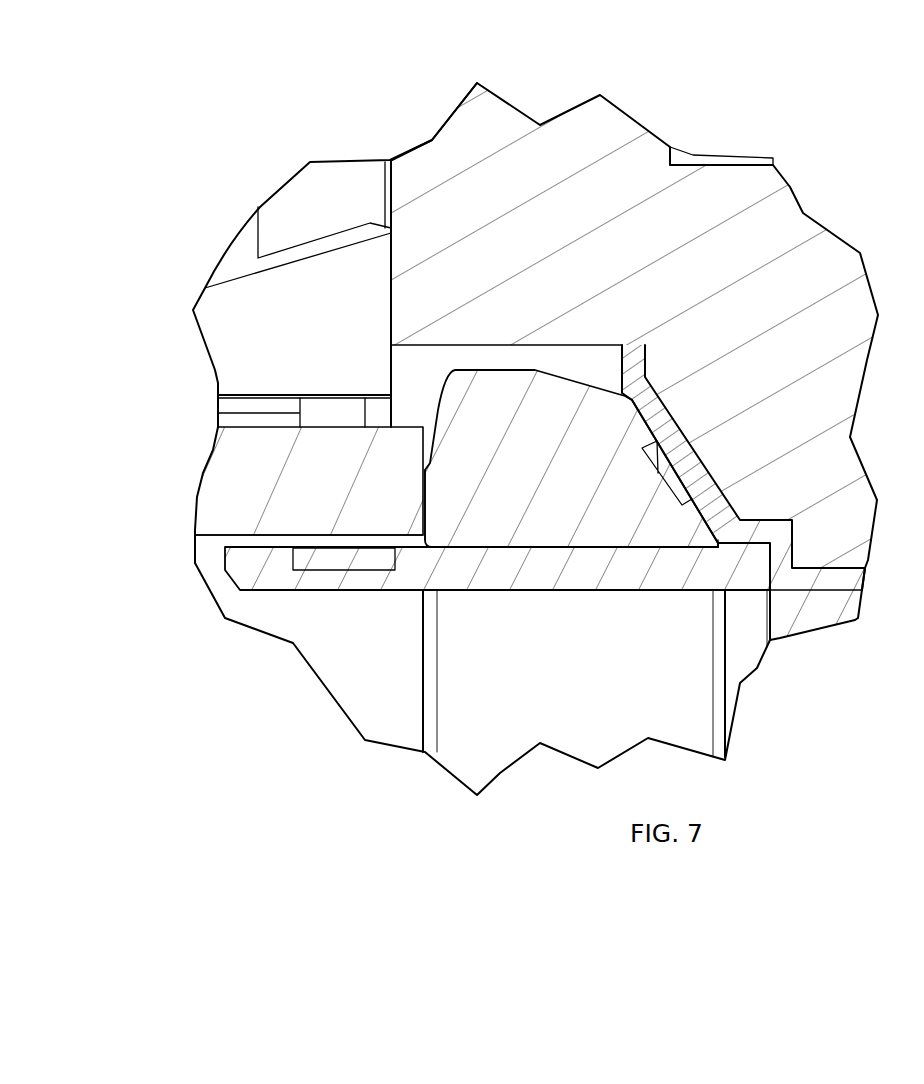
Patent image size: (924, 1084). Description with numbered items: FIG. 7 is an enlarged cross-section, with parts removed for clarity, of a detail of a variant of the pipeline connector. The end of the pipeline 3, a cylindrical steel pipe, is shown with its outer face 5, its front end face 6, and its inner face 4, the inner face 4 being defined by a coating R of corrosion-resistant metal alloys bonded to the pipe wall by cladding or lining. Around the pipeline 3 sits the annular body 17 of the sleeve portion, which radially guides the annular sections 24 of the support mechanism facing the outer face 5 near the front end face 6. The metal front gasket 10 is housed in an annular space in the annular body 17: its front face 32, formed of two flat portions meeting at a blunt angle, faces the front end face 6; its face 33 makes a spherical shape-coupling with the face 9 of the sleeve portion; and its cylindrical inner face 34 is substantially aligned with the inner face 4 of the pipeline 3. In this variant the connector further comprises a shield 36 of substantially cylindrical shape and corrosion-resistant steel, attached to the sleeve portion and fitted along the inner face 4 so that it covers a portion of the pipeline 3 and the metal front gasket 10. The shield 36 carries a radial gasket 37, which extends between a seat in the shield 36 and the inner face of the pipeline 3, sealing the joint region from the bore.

The pipeline 3 is at (160, 502).
The inner face 4 is at (276, 558).
The outer face 5 is at (373, 418).
The front end face 6 is at (176, 604).
The face 9 is at (695, 521).
The metal front gasket 10 is at (593, 737).
The annular body 17 is at (635, 160).
The annular sections 24 is at (240, 343).
The front face 32 is at (413, 460).
The face 33 is at (662, 419).
The inner face 34 is at (588, 563).
The shield 36 is at (410, 580).
The radial gasket 37 is at (327, 584).
The coating R is at (210, 543).